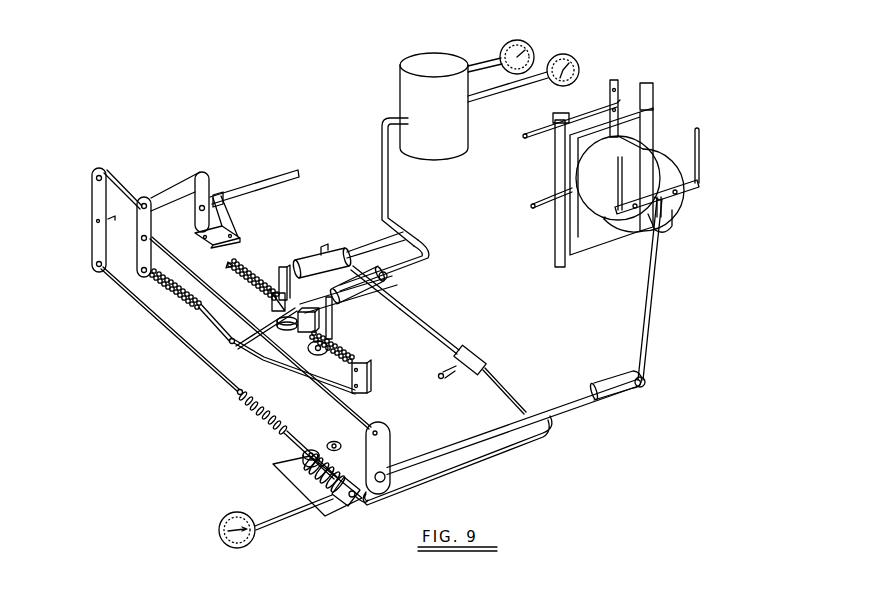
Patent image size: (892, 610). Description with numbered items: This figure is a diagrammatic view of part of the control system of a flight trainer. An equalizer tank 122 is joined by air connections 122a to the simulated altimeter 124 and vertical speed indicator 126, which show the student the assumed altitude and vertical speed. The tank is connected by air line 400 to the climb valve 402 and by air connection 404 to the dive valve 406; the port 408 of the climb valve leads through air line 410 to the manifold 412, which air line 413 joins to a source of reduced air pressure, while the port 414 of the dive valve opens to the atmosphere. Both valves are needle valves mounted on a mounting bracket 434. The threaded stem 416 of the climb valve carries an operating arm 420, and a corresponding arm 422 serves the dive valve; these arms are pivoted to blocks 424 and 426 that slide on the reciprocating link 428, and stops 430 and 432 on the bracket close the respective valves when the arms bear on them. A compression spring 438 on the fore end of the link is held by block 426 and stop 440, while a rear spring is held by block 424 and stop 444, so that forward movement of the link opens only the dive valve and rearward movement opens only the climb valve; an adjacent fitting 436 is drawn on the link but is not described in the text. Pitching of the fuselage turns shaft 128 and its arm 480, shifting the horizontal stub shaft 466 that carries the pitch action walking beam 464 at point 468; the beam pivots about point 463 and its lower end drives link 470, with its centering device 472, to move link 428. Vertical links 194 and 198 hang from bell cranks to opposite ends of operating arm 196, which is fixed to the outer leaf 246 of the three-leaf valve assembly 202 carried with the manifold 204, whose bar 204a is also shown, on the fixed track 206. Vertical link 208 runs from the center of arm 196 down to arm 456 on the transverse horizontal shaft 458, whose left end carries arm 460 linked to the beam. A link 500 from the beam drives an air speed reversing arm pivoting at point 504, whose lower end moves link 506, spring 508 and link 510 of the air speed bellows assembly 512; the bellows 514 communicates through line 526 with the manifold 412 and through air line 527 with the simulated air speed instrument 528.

The equalizer tank 122 is at (410, 62).
The air connections 122a is at (495, 89).
The vertical speed indicator 126 is at (525, 47).
The simulated altimeter 124 is at (581, 68).
The shaft 128 is at (265, 181).
The vertical link 194 is at (625, 178).
The operating arm 196 is at (697, 191).
The vertical link 198 is at (700, 165).
The three-leaf valve assembly 202 is at (562, 179).
The manifold 204 is at (577, 163).
The plate bar 204a is at (564, 229).
The track 206 is at (558, 250).
The vertical link 208 is at (658, 286).
The outer leaf 246 is at (684, 203).
The air line 400 is at (428, 262).
The climb valve 402 is at (386, 293).
The air connection 404 is at (393, 226).
The dive valve 406 is at (307, 260).
The port 408 is at (386, 279).
The air line 410 is at (421, 331).
The manifold 412 is at (462, 356).
The air line 413 is at (443, 377).
The port 414 is at (324, 246).
The threaded stem 416 is at (352, 305).
The operating arm 420 is at (332, 330).
The operating arm 422 is at (267, 292).
The block 424 is at (288, 325).
The block 426 is at (274, 303).
The reciprocating link 428 is at (341, 348).
The stop 430 is at (316, 318).
The stop 432 is at (281, 267).
The mounting bracket 434 is at (353, 268).
The rod 436 is at (240, 341).
The compression spring 438 is at (229, 264).
The stop 440 is at (244, 263).
The stop 444 is at (368, 386).
The arm 456 is at (606, 393).
The transverse horizontal shaft 458 is at (445, 449).
The arm 460 is at (383, 455).
The point 463 is at (150, 238).
The pitch action walking beam 464 is at (144, 268).
The horizontal stub shaft 466 is at (173, 188).
The point 468 is at (144, 199).
The link 470 is at (263, 362).
The centering device 472 is at (156, 305).
The arm 480 is at (215, 196).
The link 500 is at (110, 178).
The point 504 is at (96, 222).
The link 506 is at (196, 352).
The spring 508 is at (241, 408).
The link 510 is at (290, 432).
The air speed bellows assembly 512 is at (294, 478).
The air proof bellows 514 is at (328, 462).
The line 526 is at (498, 387).
The air line 527 is at (273, 529).
The simulated air speed instrument 528 is at (226, 521).